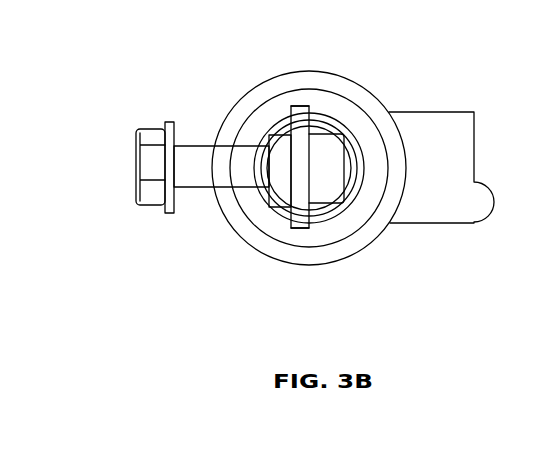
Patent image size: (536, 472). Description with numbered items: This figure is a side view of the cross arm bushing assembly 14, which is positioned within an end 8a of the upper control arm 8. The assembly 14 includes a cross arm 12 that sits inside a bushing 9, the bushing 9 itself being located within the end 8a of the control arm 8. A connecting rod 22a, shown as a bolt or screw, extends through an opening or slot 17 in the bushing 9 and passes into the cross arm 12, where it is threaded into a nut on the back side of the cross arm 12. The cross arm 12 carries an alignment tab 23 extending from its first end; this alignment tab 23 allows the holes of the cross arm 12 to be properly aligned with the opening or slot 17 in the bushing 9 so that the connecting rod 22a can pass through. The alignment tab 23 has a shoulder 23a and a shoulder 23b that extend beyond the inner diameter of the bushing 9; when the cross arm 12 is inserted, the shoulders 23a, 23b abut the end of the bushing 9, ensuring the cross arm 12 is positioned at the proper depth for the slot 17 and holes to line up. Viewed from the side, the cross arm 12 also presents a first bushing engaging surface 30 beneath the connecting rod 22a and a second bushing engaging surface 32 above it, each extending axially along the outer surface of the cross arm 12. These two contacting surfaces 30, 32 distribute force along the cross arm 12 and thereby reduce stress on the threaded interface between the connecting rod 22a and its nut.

The upper control arm 8 is at (430, 112).
The end of upper control arm 8a is at (373, 237).
The bushing 9 is at (325, 235).
The cross arm 12 is at (275, 226).
The cross arm bushing assembly 14 is at (281, 36).
The opening or slot in bushing 17 is at (230, 190).
The connecting rod 22a is at (200, 145).
The alignment tab 23 is at (300, 163).
The shoulder 23a is at (302, 106).
The shoulder 23b is at (286, 222).
The first bushing engaging surface 30 is at (270, 222).
The second bushing engaging surface 32 is at (272, 132).